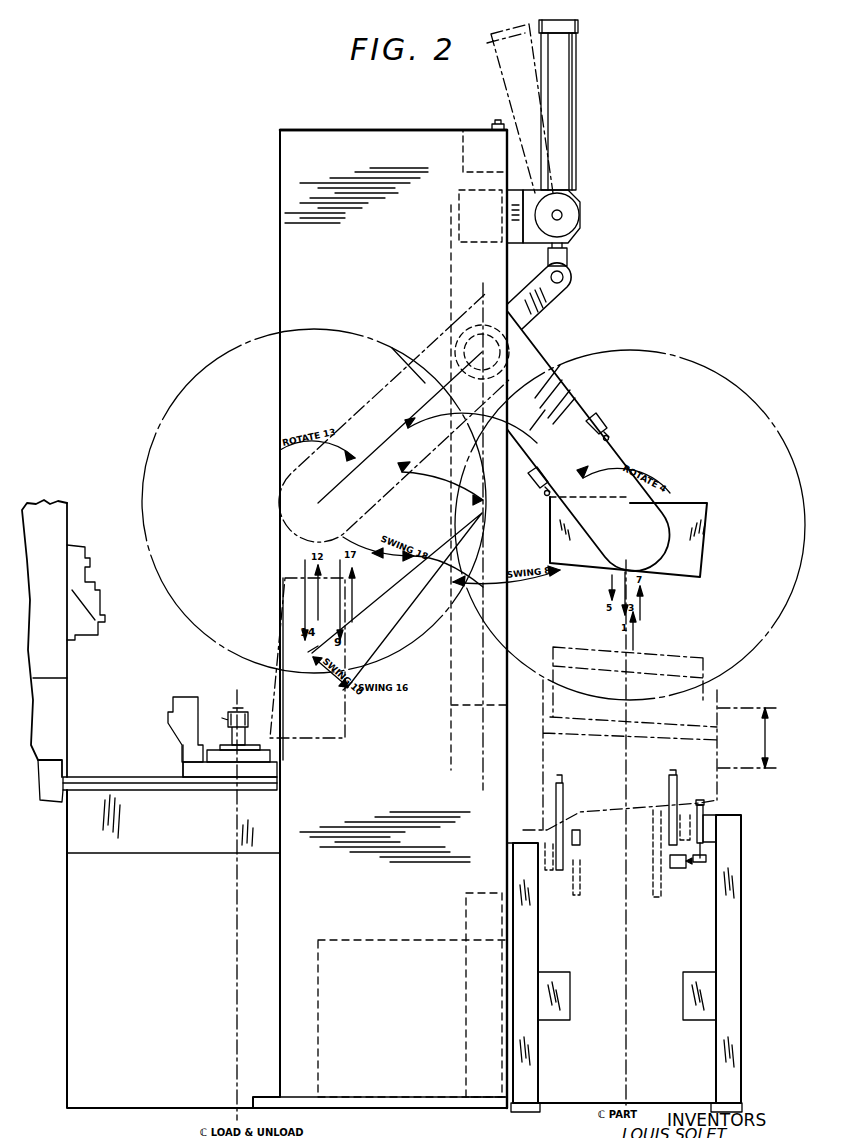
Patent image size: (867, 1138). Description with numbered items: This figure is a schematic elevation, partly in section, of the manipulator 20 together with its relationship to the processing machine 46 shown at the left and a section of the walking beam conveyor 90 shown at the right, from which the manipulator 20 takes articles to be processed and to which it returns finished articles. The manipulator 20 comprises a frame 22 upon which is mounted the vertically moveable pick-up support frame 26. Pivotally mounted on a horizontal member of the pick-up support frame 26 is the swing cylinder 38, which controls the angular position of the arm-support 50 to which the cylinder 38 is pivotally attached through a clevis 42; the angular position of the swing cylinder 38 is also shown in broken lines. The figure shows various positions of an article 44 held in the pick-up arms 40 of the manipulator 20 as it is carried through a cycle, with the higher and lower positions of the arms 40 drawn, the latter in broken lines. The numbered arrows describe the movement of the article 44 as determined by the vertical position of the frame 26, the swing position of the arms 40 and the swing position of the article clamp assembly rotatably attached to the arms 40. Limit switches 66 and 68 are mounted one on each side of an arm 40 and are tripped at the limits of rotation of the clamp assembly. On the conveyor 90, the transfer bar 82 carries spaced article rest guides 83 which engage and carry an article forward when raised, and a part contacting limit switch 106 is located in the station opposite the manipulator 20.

The manipulator 20 is at (277, 247).
The frame 22 is at (359, 130).
The pick-up support frame 26 is at (452, 232).
The swing cylinder 38 is at (576, 72).
The pick-up arms 40 is at (540, 374).
The clevis 42 is at (569, 254).
The article 44 is at (707, 546).
The processing machine 46 is at (50, 502).
The arm-support 50 is at (458, 339).
The limit switch 66 is at (608, 424).
The limit switch 68 is at (534, 490).
The transfer bar 82 is at (582, 872).
The article rest guides 83 is at (580, 838).
The walking beam conveyor 90 is at (741, 832).
The part contacting limit switch 106 is at (695, 868).